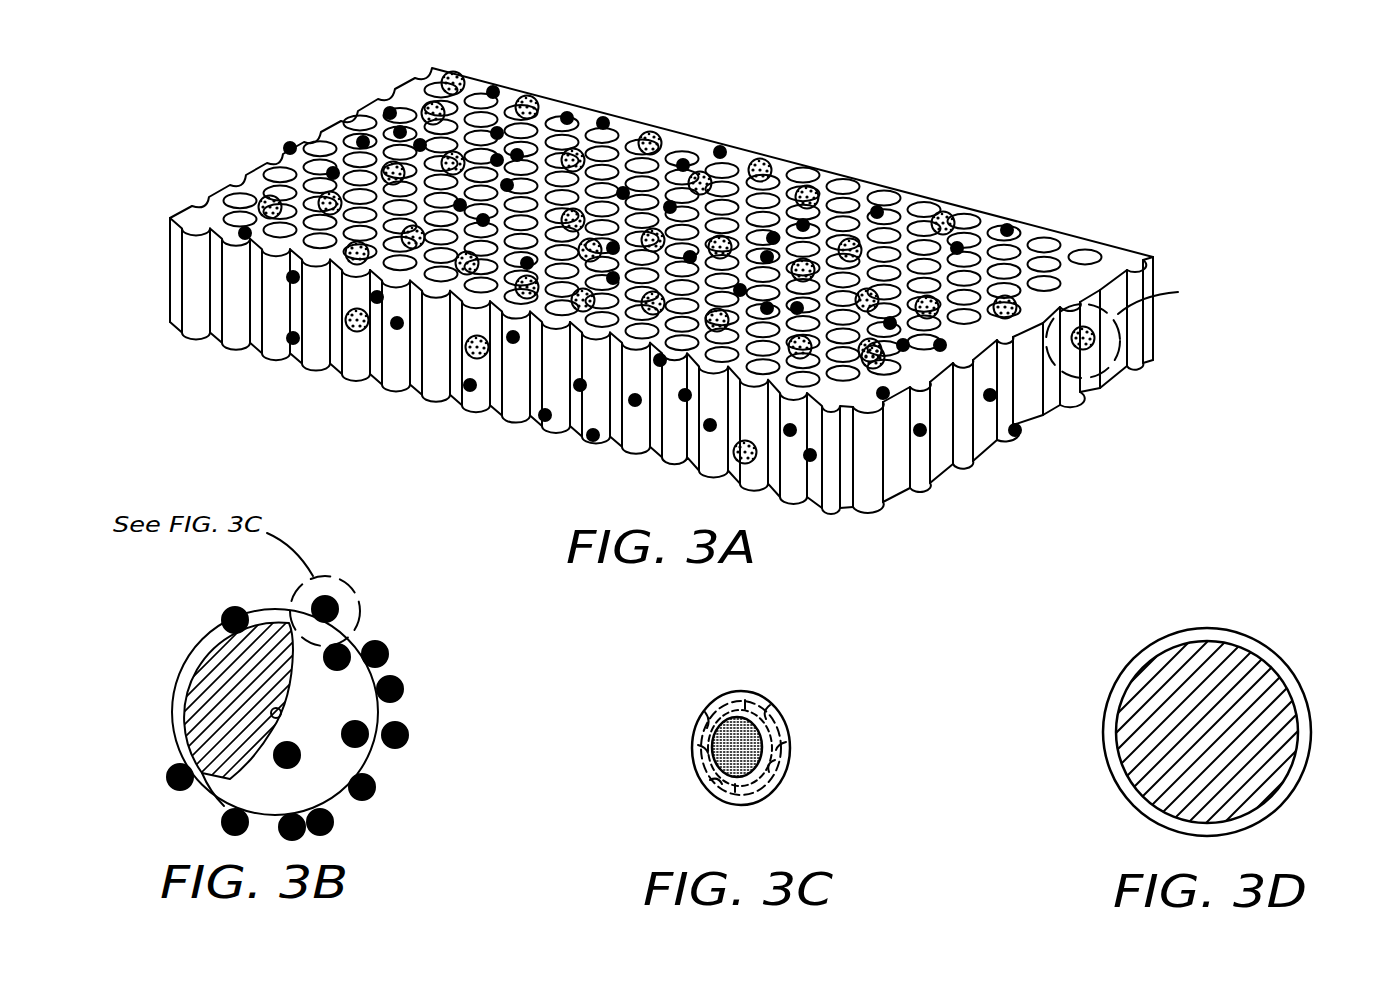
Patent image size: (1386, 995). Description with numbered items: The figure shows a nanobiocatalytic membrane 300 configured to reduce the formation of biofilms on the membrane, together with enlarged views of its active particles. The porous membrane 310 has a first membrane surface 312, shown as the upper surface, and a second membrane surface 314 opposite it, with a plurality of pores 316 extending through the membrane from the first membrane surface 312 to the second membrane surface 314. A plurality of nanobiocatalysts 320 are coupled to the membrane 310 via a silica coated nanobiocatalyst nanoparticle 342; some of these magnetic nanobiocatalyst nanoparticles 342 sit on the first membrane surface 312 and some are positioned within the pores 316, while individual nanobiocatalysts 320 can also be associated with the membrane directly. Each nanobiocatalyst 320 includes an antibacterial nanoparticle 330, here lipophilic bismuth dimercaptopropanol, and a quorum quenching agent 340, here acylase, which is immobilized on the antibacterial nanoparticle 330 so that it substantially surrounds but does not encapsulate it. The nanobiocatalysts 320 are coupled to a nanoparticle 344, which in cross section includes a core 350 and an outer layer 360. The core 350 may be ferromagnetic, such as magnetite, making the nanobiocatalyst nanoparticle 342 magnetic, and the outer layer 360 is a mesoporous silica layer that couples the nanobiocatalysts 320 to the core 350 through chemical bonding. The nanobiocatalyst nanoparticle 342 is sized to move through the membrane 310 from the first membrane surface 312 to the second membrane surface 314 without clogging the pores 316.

In FIG. 3A, the nanobiocatalytic membrane 300 is at (1122, 138).
In FIG. 3A, the porous membrane 310 is at (343, 110).
In FIG. 3A, the first membrane surface 312 is at (1075, 240).
In FIG. 3A, the second membrane surface 314 is at (977, 457).
In FIG. 3A, the pores 316 is at (265, 160).
In FIG. 3A, the nanobiocatalysts 320 is at (612, 123).
In FIG. 3B, the nanobiocatalysts 320 is at (407, 730).
In FIG. 3C, the nanobiocatalysts 320 is at (790, 731).
In FIG. 3C, the antibacterial nanoparticle 330 is at (765, 695).
In FIG. 3C, the quorum quenching agent 340 is at (778, 780).
In FIG. 3A, the nanobiocatalyst nanoparticle 342 is at (442, 68).
In FIG. 3B, the nanobiocatalyst nanoparticle 342 is at (427, 683).
In FIG. 3B, the nanoparticle 344 is at (181, 664).
In FIG. 3D, the nanoparticle 344 is at (1219, 616).
In FIG. 3B, the core 350 is at (182, 718).
In FIG. 3D, the core 350 is at (1130, 687).
In FIG. 3B, the outer layer 360 is at (349, 640).
In FIG. 3D, the outer layer 360 is at (1273, 813).